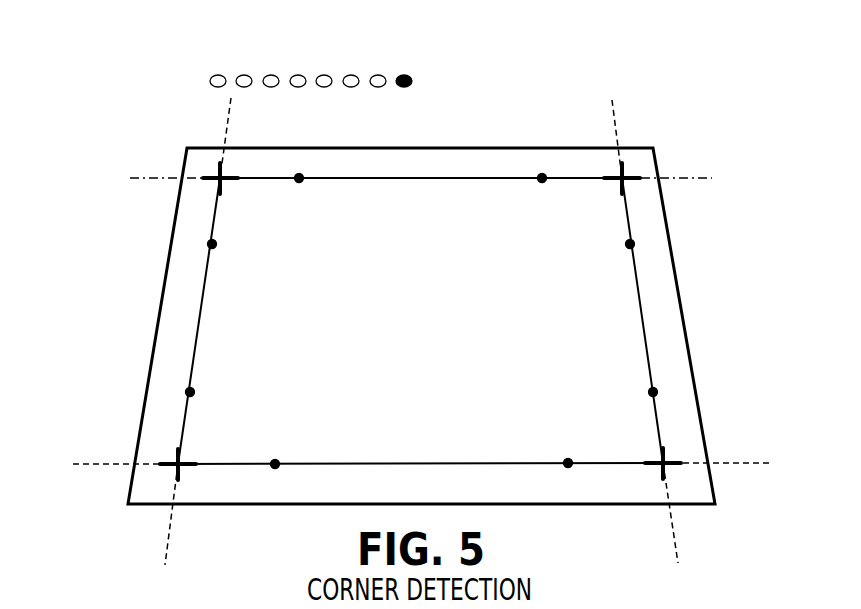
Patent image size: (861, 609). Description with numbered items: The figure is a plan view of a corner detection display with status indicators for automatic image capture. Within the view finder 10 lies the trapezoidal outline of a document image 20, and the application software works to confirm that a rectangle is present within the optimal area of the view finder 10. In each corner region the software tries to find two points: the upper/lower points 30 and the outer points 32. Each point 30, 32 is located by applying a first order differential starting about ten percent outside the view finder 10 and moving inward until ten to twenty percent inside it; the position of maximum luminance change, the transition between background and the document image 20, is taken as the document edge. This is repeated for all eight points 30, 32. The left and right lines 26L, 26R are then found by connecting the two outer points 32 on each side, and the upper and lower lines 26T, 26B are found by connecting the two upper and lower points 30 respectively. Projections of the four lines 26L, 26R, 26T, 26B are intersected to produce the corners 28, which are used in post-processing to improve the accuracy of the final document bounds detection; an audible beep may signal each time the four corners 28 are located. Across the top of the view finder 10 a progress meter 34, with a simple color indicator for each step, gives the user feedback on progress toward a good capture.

The view finder 10 is at (157, 323).
The document image 20 is at (424, 178).
The left line 26L is at (226, 122).
The right line 26R is at (612, 102).
The upper line 26T is at (155, 178).
The lower line 26B is at (103, 466).
The corners 28 is at (228, 185).
The upper/lower points 30 is at (299, 178).
The outer points 32 is at (212, 244).
The progress meter 34 is at (425, 64).